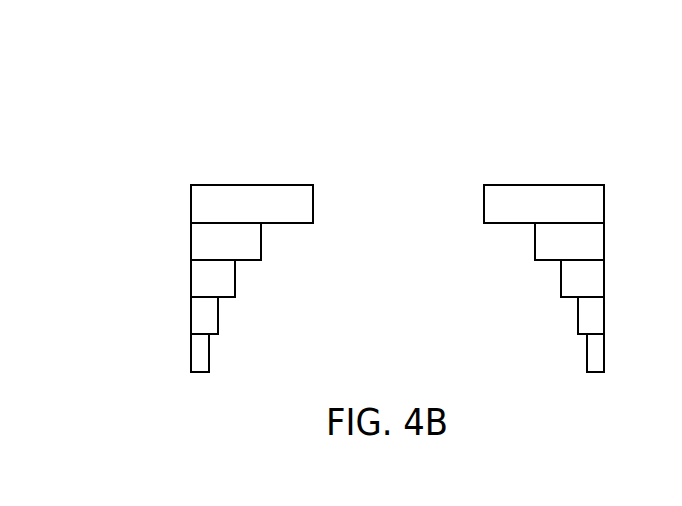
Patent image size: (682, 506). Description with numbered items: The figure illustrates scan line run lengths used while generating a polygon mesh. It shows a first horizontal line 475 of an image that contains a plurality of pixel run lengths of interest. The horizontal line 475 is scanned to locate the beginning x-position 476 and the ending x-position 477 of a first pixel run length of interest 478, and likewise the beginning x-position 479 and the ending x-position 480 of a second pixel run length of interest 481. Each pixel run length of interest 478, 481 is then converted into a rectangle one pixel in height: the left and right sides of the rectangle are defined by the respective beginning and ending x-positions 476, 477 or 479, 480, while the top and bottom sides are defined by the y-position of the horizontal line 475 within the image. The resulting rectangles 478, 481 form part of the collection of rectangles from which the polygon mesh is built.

The first horizontal line 475 is at (172, 204).
The beginning x-position 476 is at (192, 160).
The ending x-position 477 is at (312, 160).
The first pixel run length of interest 478 is at (252, 278).
The beginning x-position 479 is at (484, 160).
The ending x-position 480 is at (604, 160).
The second pixel run length of interest 481 is at (544, 278).